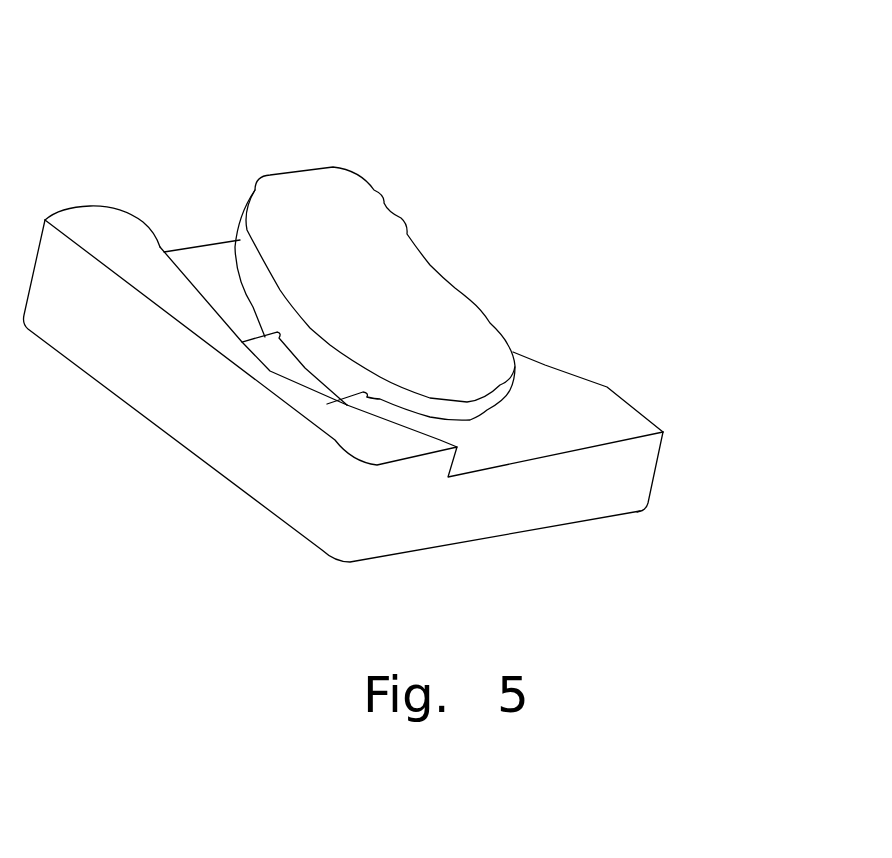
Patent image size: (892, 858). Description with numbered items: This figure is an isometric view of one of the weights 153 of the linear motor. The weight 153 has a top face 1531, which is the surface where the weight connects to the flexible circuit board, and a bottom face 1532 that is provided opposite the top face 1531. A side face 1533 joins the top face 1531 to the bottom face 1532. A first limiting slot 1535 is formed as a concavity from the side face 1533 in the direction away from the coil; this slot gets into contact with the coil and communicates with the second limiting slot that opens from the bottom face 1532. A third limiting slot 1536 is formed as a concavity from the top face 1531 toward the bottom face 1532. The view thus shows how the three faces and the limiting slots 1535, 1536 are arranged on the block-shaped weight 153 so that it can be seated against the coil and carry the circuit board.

The weight 153 is at (420, 49).
The top face 1531 is at (458, 349).
The bottom face 1532 is at (593, 520).
The side face 1533 is at (603, 483).
The first limiting slot 1535 is at (489, 287).
The third limiting slot 1536 is at (263, 337).